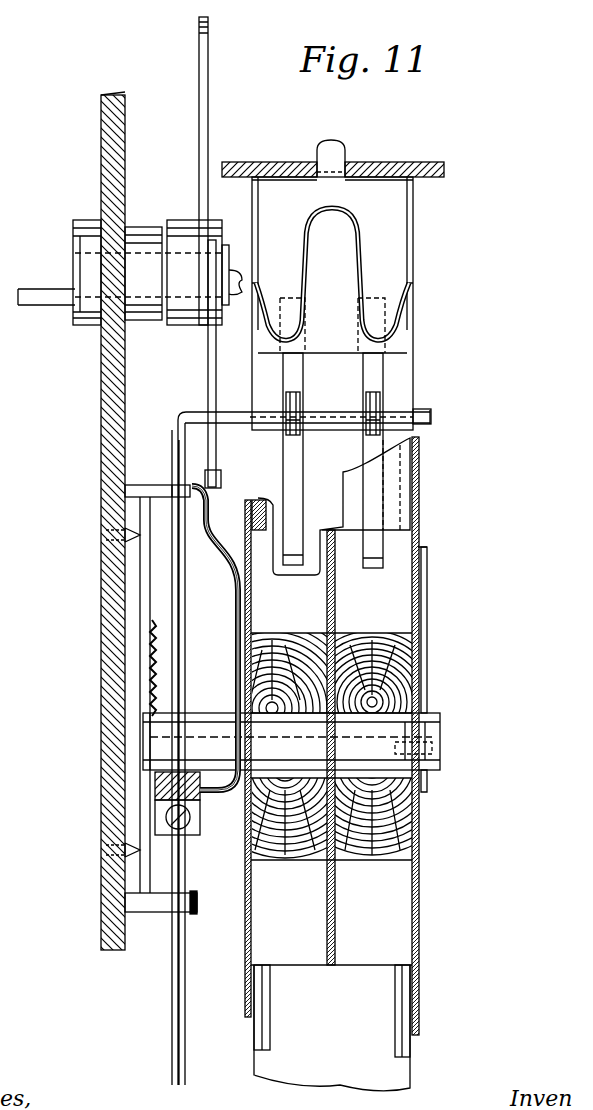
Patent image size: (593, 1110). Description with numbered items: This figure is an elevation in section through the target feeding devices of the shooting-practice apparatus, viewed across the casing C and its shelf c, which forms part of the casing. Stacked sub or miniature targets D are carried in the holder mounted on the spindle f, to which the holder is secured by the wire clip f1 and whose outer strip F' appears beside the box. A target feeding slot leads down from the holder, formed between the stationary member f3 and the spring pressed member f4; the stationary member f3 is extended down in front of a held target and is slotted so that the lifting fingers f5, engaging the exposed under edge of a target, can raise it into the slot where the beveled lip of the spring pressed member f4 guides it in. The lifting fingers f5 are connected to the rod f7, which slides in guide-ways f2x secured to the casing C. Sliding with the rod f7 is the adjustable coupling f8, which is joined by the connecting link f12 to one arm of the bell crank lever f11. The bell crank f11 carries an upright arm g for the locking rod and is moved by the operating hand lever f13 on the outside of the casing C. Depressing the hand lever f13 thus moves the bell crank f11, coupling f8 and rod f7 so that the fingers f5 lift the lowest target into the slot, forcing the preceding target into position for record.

The casing C is at (101, 660).
The shelf c is at (388, 165).
The upright arm g is at (203, 125).
The spindle f is at (432, 732).
The wire clip f1 is at (433, 622).
The outer strip of box F' is at (431, 669).
The bracket f2x is at (153, 484).
The stationary member f3 is at (332, 303).
The spring pressed member f4 is at (332, 274).
The lifting fingers f5 is at (290, 472).
The rod f7 is at (183, 411).
The coupling f8 is at (190, 826).
The bell crank lever f11 is at (212, 363).
The connecting link f12 is at (234, 606).
The operating lever f13 is at (44, 297).
The sub or miniature target D is at (331, 506).